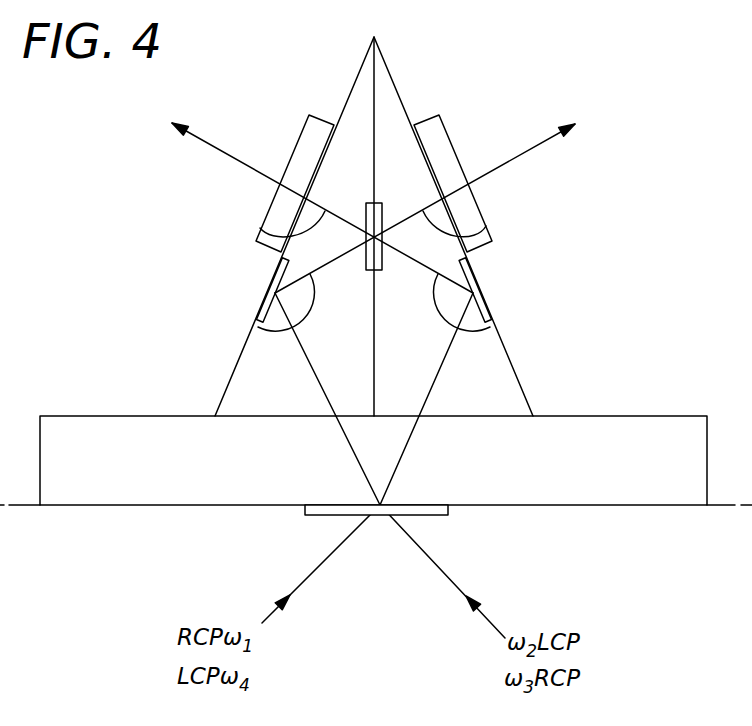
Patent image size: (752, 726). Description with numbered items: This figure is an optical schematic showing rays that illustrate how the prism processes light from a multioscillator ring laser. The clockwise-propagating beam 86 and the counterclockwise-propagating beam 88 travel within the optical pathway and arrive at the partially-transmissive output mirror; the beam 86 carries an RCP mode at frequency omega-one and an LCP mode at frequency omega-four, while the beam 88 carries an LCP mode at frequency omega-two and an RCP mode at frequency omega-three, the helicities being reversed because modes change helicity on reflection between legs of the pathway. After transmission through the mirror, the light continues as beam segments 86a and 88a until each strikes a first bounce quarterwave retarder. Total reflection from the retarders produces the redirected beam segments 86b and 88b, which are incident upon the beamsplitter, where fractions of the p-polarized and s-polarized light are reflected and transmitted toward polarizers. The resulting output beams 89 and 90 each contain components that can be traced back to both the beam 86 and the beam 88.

The clockwise-propagating beam 86 is at (342, 540).
The beam segment 86a is at (453, 338).
The redirected beam segment 86b is at (490, 327).
The counterclockwise-propagating beam 88 is at (425, 550).
The beam segment 88a is at (308, 362).
The redirected beam segment 88b is at (258, 327).
The output beam 89 is at (486, 226).
The output beam 90 is at (260, 228).